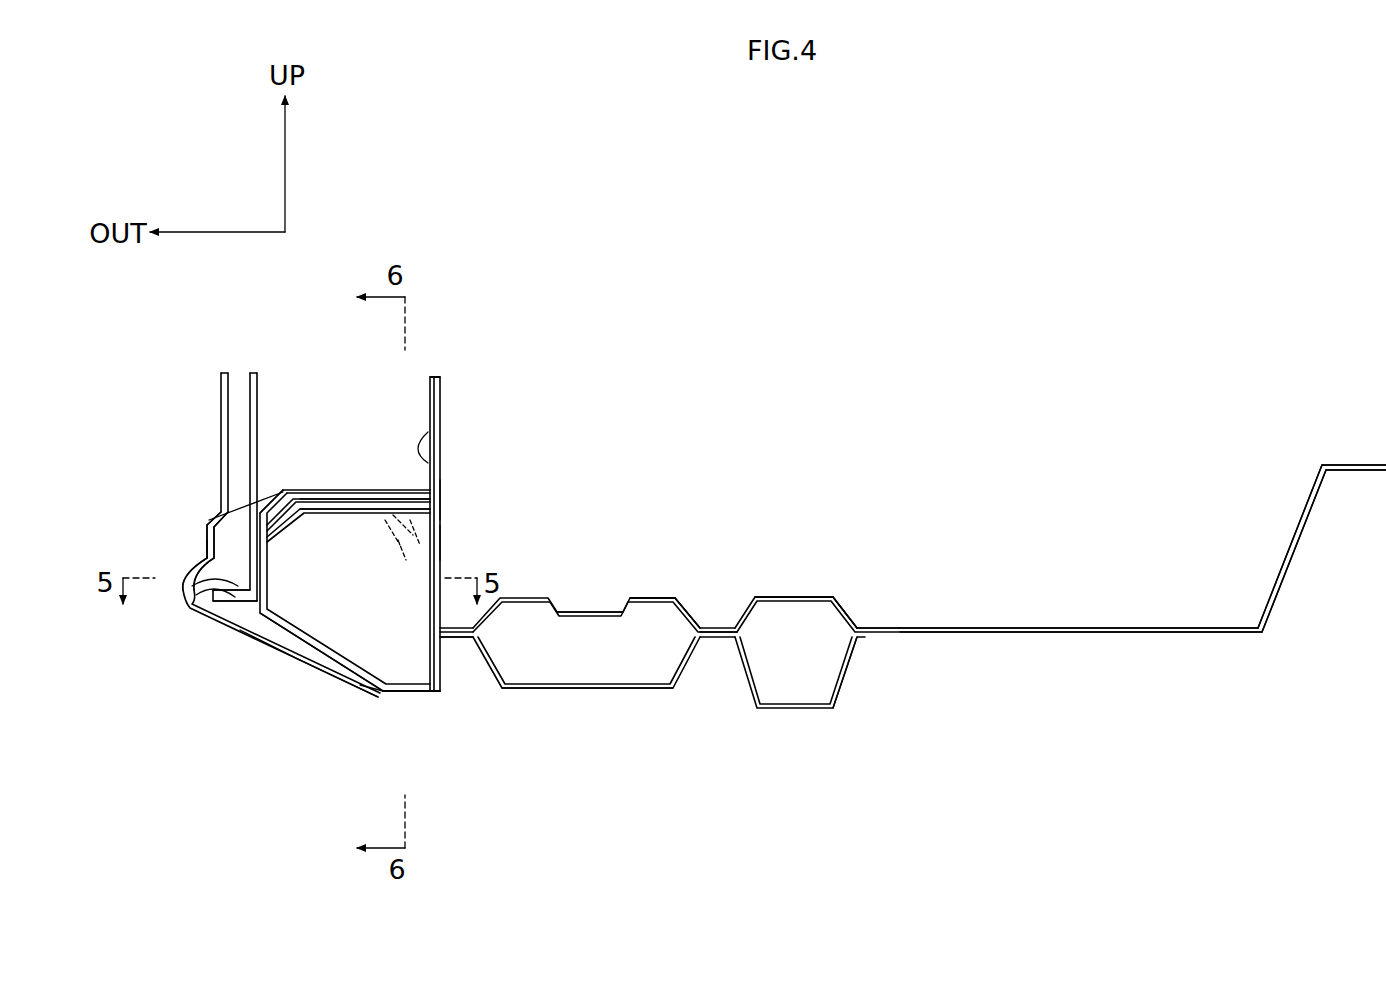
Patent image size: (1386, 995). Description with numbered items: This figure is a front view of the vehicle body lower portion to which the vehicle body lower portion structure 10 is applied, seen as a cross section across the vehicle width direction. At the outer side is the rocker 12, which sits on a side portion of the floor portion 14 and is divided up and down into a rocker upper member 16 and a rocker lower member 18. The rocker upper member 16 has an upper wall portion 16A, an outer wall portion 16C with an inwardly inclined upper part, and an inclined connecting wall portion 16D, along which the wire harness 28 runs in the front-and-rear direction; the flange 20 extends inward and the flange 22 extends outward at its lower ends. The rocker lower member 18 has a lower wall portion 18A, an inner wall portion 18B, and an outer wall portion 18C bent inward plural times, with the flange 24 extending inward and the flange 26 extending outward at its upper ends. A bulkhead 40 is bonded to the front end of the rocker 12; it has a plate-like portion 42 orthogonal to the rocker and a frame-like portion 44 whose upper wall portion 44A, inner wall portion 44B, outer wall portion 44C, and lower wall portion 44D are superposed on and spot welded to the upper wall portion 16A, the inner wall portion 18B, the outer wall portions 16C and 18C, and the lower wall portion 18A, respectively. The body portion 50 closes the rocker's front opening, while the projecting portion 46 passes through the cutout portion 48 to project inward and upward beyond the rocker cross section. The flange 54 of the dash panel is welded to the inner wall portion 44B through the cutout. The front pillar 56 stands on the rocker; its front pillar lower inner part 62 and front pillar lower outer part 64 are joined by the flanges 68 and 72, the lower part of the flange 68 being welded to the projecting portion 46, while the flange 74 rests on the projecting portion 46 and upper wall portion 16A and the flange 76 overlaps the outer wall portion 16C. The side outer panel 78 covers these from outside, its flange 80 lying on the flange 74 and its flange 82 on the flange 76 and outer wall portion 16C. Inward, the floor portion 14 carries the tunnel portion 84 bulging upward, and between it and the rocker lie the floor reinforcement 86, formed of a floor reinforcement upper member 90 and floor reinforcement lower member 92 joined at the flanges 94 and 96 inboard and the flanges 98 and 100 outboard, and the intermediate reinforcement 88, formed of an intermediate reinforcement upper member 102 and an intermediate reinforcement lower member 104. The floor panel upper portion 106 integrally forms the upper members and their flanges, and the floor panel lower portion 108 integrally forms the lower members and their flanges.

The vehicle body lower portion structure 10 is at (888, 340).
The rocker 12 is at (138, 620).
The floor portion 14 is at (1125, 640).
The rocker upper member 16 is at (188, 600).
The upper wall portion 16A is at (325, 490).
The outer wall portion 16C is at (206, 540).
The connecting wall portion 16D is at (400, 550).
The rocker lower member 18 is at (232, 618).
The lower wall portion 18A is at (398, 697).
The inner wall portion 18B is at (445, 695).
The outer wall portion 18C is at (270, 632).
The flange 20 is at (466, 640).
The flange 22 is at (222, 592).
The flange 24 is at (457, 645).
The flange 26 is at (230, 608).
The wire harness 28 is at (425, 470).
The bulkhead 40 is at (372, 697).
The plate-like portion 42 is at (335, 675).
The frame-like portion 44 is at (292, 652).
The upper wall portion 44A is at (355, 515).
The inner wall portion 44B is at (423, 607).
The outer wall portion 44C is at (268, 562).
The lower wall portion 44D is at (285, 630).
The projecting portion 46 is at (441, 497).
The cutout portion 48 is at (390, 505).
The body portion 50 is at (290, 500).
The flange 54 is at (490, 632).
The front pillar 56 is at (540, 278).
The front pillar lower inner part 62 is at (441, 398).
The front pillar lower outer part 64 is at (428, 378).
The flange 68 is at (443, 537).
The flange 72 is at (441, 432).
The flange 74 is at (360, 495).
The flange 76 is at (228, 525).
The side outer panel 78 is at (195, 548).
The flange 80 is at (305, 490).
The flange 82 is at (196, 535).
The tunnel portion 84 is at (1293, 527).
The floor reinforcement 86 is at (908, 468).
The intermediate reinforcement 88 is at (736, 468).
The floor reinforcement upper member 90 is at (816, 598).
The floor reinforcement lower member 92 is at (868, 622).
The flange 94 is at (893, 630).
The flange 96 is at (862, 650).
The flange 98 is at (736, 630).
The flange 100 is at (728, 652).
The intermediate reinforcement upper member 102 is at (656, 598).
The intermediate reinforcement lower member 104 is at (672, 610).
The floor panel upper portion 106 is at (600, 606).
The floor panel lower portion 108 is at (605, 697).